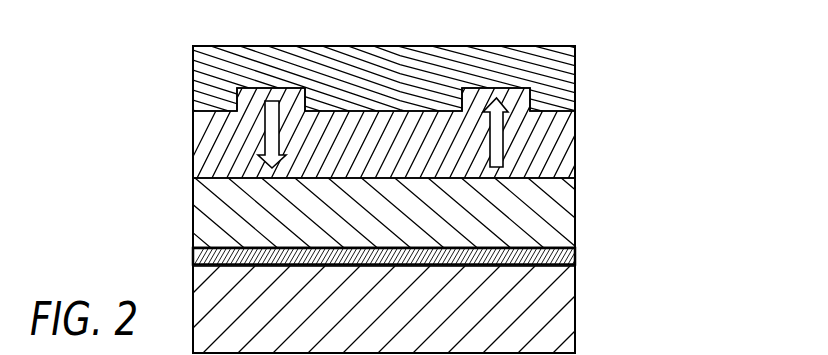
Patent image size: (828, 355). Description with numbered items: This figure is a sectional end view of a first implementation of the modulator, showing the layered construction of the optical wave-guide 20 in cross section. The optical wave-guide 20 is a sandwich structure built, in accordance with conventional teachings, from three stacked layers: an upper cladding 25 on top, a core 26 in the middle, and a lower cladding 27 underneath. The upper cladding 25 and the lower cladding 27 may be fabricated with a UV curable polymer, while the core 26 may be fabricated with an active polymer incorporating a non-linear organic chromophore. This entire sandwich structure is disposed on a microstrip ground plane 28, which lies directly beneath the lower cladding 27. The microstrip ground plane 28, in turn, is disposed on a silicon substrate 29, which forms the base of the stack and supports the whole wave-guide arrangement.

The optical wave-guide 20 is at (193, 80).
The upper cladding 25 is at (562, 82).
The core 26 is at (562, 146).
The lower cladding 27 is at (560, 209).
The microstrip ground plane 28 is at (560, 255).
The silicon substrate 29 is at (560, 306).